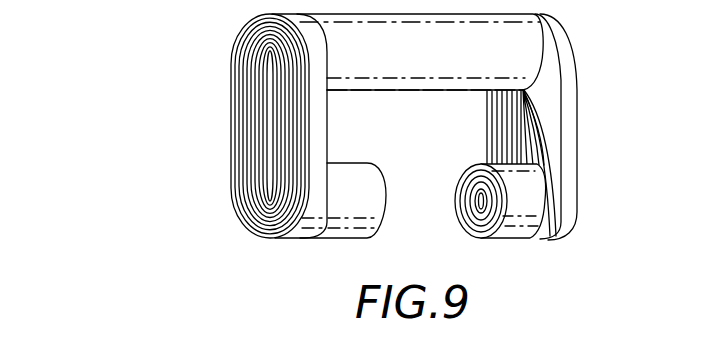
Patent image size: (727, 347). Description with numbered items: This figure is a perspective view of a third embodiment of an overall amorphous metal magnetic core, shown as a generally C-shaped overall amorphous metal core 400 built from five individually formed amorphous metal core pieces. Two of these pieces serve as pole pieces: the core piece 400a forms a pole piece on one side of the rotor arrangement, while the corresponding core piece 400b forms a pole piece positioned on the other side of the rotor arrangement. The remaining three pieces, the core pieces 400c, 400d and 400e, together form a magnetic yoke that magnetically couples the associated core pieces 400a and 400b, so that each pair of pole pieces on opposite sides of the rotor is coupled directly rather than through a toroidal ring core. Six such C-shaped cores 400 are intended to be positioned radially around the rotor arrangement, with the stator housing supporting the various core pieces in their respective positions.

The C-shaped overall amorphous metal core 400 is at (214, 208).
The core piece 400a is at (357, 214).
The core piece 400b is at (512, 222).
The core piece 400c is at (258, 120).
The core piece 400d is at (470, 78).
The core piece 400e is at (573, 162).